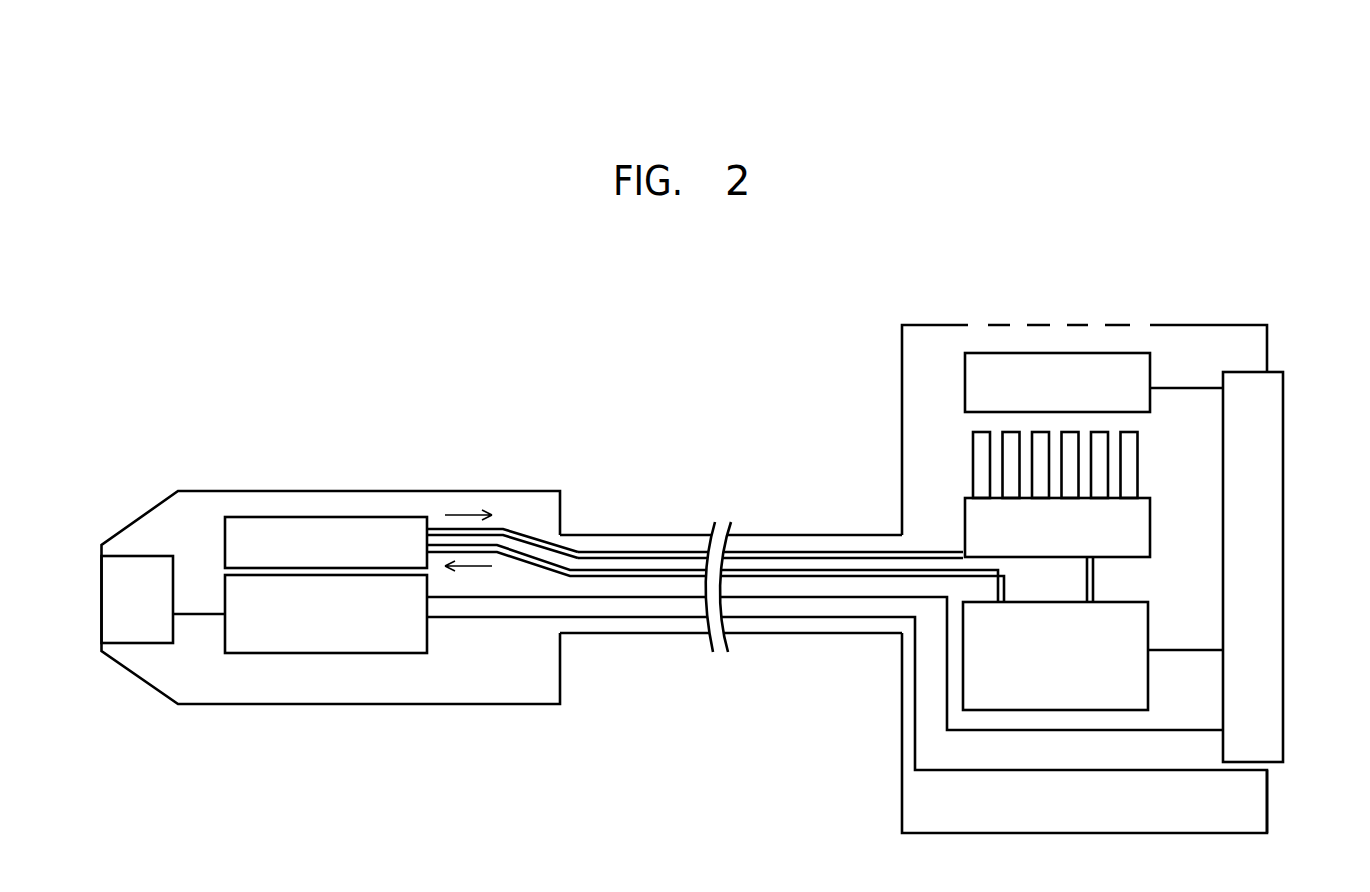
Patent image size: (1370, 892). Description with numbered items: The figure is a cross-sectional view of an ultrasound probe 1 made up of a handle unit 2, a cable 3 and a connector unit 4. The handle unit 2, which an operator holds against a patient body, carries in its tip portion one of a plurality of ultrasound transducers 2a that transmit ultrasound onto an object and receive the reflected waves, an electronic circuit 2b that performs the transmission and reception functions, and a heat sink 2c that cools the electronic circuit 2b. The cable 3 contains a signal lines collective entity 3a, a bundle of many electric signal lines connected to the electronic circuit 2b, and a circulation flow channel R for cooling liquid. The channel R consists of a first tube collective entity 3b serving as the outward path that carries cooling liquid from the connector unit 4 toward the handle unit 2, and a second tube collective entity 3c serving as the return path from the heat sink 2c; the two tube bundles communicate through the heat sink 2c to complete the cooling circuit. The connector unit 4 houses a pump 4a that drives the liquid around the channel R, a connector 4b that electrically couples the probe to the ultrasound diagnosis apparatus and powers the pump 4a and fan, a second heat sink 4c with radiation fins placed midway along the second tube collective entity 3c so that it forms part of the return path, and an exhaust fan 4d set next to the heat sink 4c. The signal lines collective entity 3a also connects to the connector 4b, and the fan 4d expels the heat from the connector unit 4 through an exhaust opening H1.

The measurement device 1 is at (1143, 152).
The handle unit 2 is at (313, 489).
The ultrasound transducer 2a is at (140, 644).
The electronic circuit 2b is at (307, 654).
The heat sink 2c is at (390, 516).
The cable 3 is at (653, 534).
The signal lines collective entity 3a is at (818, 619).
The first tube collective entity 3b is at (768, 567).
The second tube collective entity 3c is at (842, 549).
The circulation flow channel R is at (597, 550).
The connector unit 4 is at (1202, 325).
The pump 4a is at (1128, 601).
The connector 4b is at (1284, 458).
The second heat sink 4c is at (1152, 520).
The exhaust fan 4d is at (1152, 366).
The exhaust opening H1 is at (983, 327).